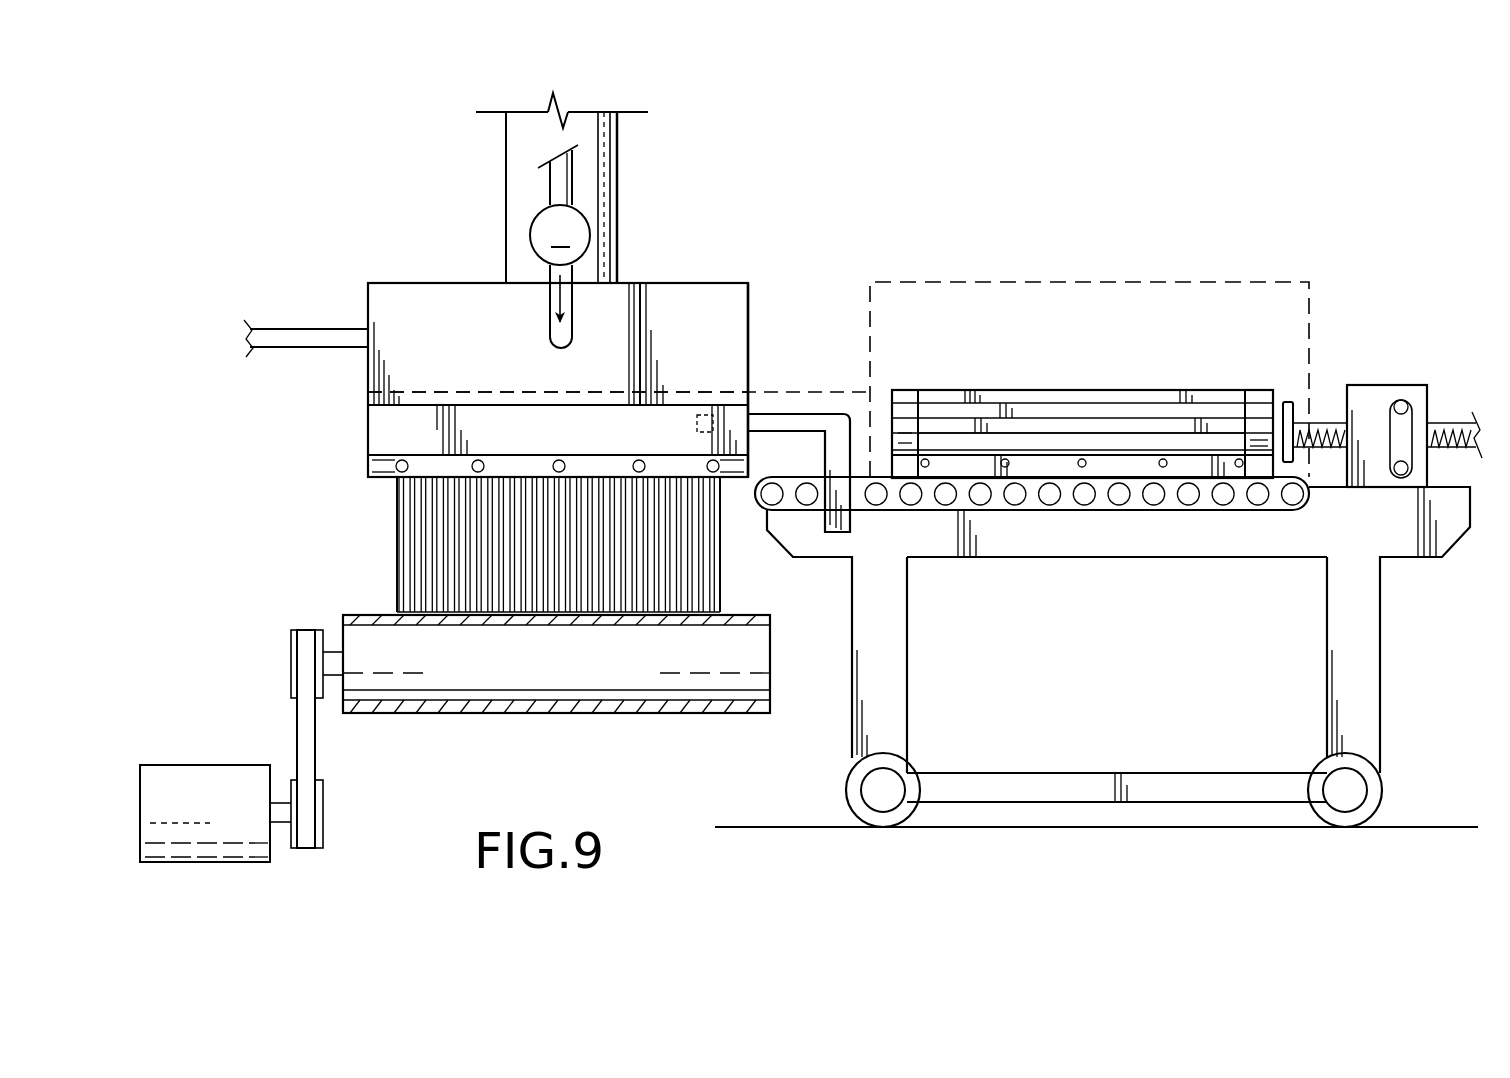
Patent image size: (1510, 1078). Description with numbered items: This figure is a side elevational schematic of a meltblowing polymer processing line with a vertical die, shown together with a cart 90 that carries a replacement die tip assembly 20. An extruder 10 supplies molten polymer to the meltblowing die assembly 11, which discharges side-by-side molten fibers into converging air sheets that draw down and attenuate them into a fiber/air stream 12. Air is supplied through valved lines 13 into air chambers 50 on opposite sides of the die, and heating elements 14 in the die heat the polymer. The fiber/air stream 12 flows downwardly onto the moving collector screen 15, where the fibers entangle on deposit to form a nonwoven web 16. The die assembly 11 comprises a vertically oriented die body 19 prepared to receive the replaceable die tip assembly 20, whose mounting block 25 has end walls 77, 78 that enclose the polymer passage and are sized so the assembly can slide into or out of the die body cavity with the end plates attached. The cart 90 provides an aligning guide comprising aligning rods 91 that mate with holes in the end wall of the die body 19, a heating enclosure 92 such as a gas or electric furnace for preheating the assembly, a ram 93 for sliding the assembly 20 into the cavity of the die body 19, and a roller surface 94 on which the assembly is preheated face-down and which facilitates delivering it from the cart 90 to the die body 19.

The extruder 10 is at (617, 160).
The meltblowing die assembly 11 is at (698, 280).
The fiber/air stream 12 is at (397, 515).
The valved lines 13 is at (557, 190).
The heating elements 14 is at (298, 333).
The moving collector screen 15 is at (362, 610).
The nonwoven web 16 is at (690, 606).
The die body 19 is at (750, 305).
The die tip assembly 20 is at (1146, 382).
The mounting block 25 is at (1050, 443).
The air chambers 50 is at (437, 358).
The end wall 77 is at (905, 410).
The end wall 78 is at (1260, 405).
The cart 90 is at (1385, 710).
The aligning rods 91 is at (778, 423).
The heating enclosure 92 is at (984, 278).
The ram 93 is at (1366, 378).
The roller surface 94 is at (1030, 515).